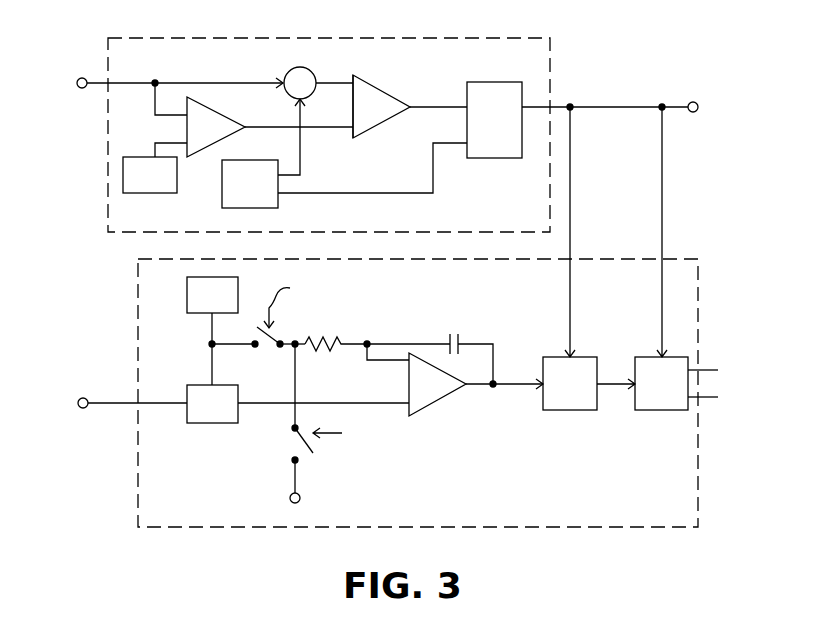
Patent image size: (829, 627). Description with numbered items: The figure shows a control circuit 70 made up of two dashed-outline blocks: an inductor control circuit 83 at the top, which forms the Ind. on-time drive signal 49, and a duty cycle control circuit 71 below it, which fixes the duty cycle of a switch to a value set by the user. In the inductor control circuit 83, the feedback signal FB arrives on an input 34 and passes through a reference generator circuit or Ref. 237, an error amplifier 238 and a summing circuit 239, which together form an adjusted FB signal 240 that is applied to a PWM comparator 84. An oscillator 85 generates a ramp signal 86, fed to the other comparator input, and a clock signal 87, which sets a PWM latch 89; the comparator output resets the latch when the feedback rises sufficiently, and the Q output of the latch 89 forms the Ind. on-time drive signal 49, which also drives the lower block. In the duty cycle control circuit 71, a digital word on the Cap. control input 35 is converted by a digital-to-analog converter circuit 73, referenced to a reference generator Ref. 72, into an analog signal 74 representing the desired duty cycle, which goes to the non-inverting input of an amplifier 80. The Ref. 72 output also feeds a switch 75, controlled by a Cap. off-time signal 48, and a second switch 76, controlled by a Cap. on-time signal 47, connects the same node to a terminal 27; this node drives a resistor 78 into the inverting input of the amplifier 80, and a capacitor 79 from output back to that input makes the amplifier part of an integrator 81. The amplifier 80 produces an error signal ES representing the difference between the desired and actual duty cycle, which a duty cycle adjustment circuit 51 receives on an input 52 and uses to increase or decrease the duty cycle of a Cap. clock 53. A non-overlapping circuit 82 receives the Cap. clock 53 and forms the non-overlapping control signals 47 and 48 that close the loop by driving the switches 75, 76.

The input 34 is at (79, 87).
The error amplifier 238 is at (210, 97).
The reference generator circuit 237 is at (165, 193).
The summing circuit 239 is at (313, 72).
The adjusted FB signal 240 is at (356, 77).
The PWM comparator 84 is at (386, 92).
The PWM latch 89 is at (500, 82).
The oscillator 85 is at (278, 203).
The ramp signal 86 is at (300, 153).
The clock signal 87 is at (433, 178).
The inductor control circuit 83 is at (550, 46).
The Ind. on-time drive signal 49 is at (697, 104).
The duty cycle control circuit 71 is at (698, 475).
The integrator 81 is at (498, 309).
The reference generator 72 is at (190, 313).
The switch 75 is at (278, 335).
The Cap. off-time signal 48 is at (729, 418).
The resistor 78 is at (322, 352).
The capacitor 79 is at (455, 334).
The amplifier 80 is at (441, 400).
The input 52 is at (535, 388).
The digital-to-analog converter circuit 73 is at (232, 385).
The analog signal 74 is at (252, 404).
The Cap. control input 35 is at (80, 408).
The switch 76 is at (290, 443).
The Cap. on-time signal 47 is at (342, 433).
The terminal 27 is at (290, 500).
The duty cycle adjustment circuit 51 is at (570, 410).
The Cap. clock 53 is at (607, 380).
The non-overlapping circuit 82 is at (660, 410).
The control circuit 70 is at (650, 565).